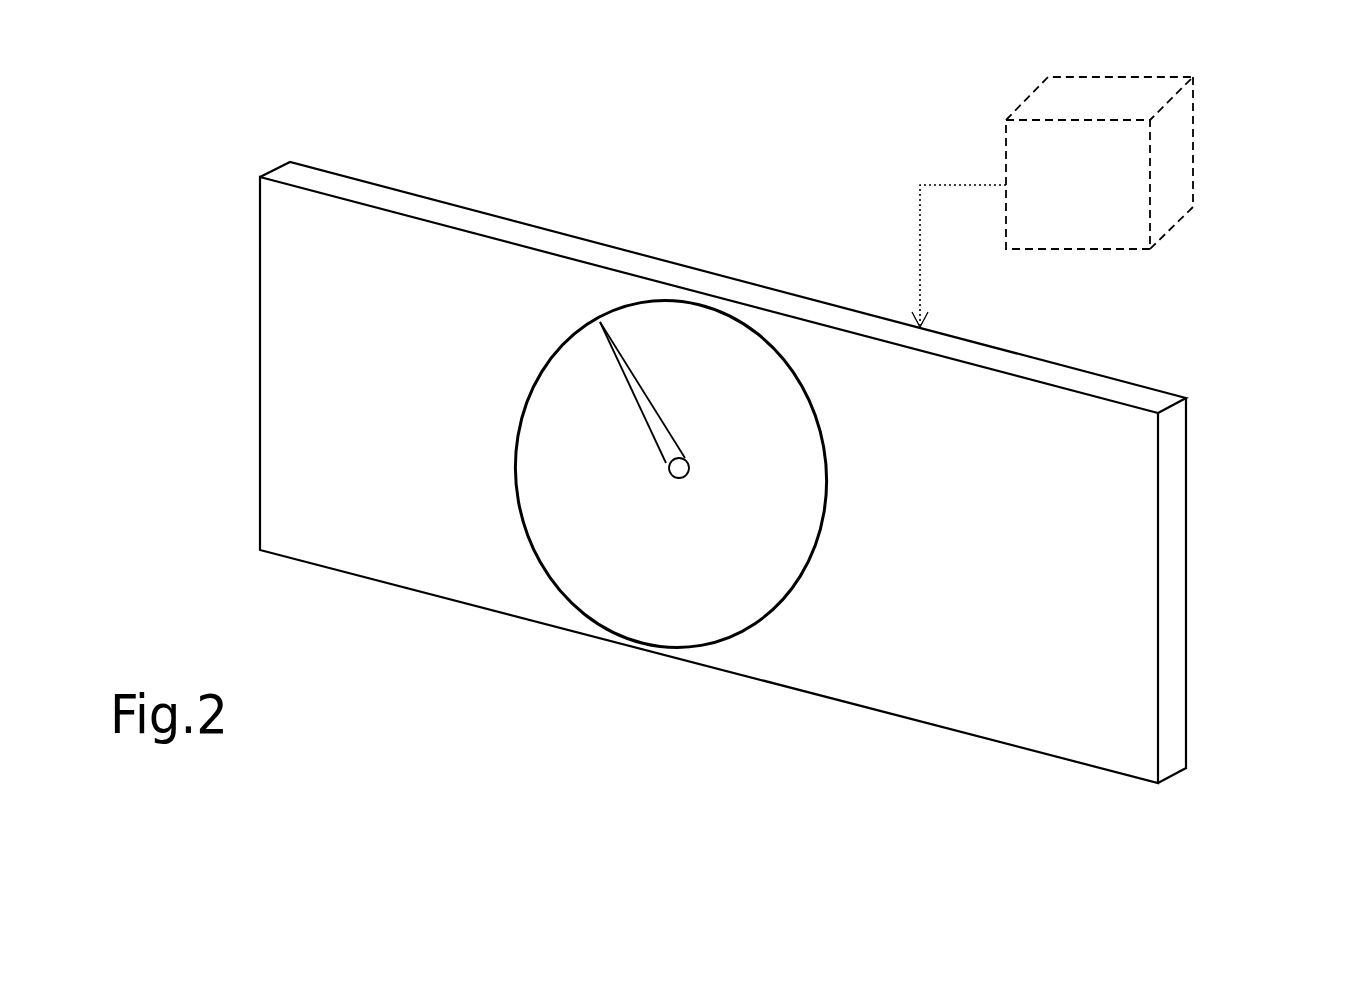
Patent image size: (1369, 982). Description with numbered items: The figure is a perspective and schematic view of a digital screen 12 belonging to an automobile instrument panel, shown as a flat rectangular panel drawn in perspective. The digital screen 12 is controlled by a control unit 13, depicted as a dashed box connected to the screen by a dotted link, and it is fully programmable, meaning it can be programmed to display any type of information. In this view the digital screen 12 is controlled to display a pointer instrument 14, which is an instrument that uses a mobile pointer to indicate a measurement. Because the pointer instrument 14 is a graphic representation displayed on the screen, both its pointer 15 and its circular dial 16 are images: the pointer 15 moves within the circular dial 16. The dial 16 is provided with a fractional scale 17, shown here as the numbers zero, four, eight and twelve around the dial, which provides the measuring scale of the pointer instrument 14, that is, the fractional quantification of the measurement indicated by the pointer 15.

The digital screen 12 is at (178, 218).
The control unit 13 is at (1243, 135).
The pointer instrument 14 is at (815, 369).
The pointer 15 is at (628, 391).
The circular dial 16 is at (720, 648).
The fractional scale 17 is at (648, 635).